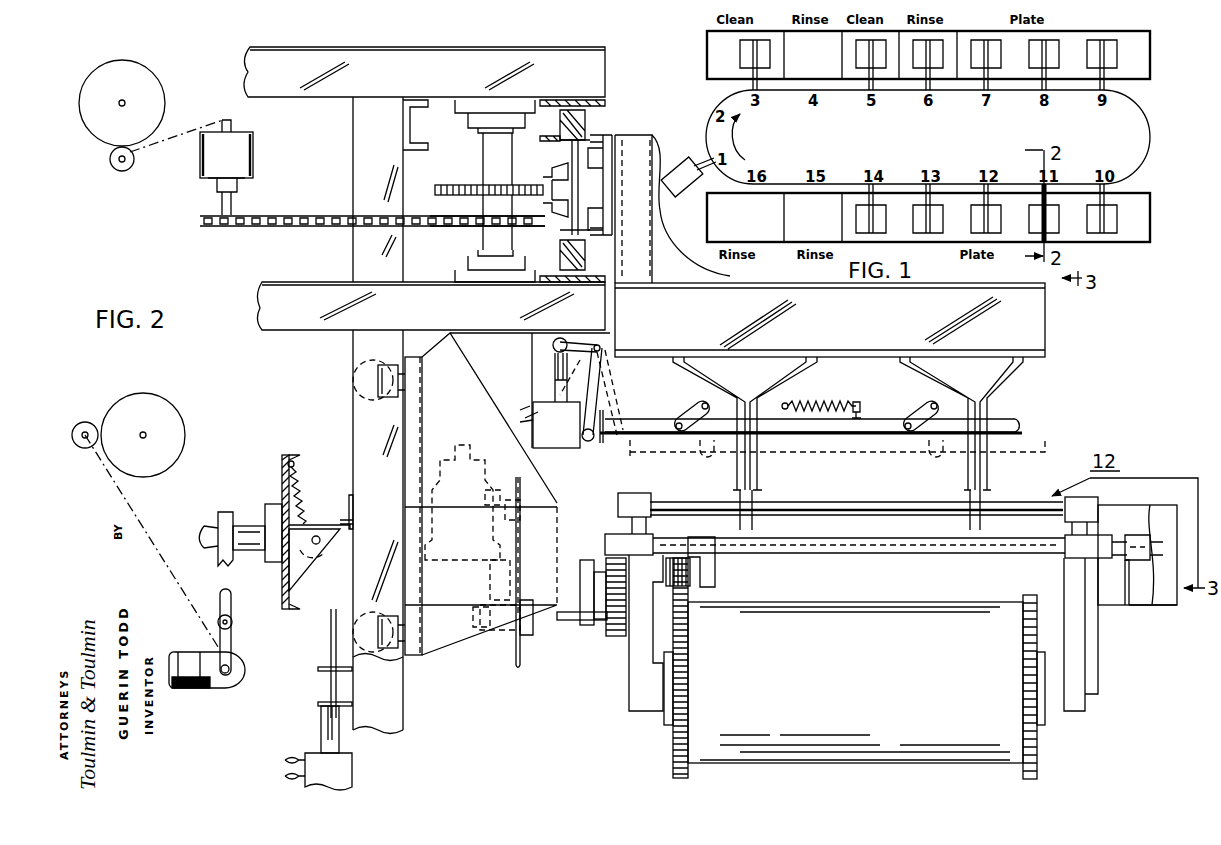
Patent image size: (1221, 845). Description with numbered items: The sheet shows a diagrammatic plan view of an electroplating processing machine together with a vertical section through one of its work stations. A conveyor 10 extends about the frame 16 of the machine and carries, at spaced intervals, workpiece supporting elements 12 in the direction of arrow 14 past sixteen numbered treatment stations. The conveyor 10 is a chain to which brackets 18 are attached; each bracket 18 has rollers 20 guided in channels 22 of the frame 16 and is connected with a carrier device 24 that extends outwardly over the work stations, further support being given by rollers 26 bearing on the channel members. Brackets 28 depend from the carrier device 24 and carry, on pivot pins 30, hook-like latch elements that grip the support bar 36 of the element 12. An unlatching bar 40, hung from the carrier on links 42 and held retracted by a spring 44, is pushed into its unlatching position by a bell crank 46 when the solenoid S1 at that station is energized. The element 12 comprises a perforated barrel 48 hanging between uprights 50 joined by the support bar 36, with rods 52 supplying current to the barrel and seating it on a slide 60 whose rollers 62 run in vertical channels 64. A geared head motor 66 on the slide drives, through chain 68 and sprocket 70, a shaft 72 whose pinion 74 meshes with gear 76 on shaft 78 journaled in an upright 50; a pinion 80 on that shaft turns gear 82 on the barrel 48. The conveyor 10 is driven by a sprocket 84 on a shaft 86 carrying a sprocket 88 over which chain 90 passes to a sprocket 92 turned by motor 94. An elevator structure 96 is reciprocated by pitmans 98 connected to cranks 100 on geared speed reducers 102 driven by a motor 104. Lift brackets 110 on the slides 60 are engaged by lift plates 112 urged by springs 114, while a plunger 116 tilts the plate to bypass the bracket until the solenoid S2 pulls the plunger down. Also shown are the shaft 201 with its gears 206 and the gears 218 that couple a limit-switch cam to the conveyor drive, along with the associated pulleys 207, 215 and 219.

In FIG. 1, the conveyor 10 is at (786, 181).
In FIG. 2, the conveyor 10 is at (548, 181).
In FIG. 2, the workpiece supporting element 12 is at (677, 172).
In FIG. 1, the arrow 14 is at (742, 156).
In FIG. 2, the frame 16 is at (352, 258).
In FIG. 2, the bracket 18 is at (590, 142).
In FIG. 2, the roller 20 is at (571, 112).
In FIG. 2, the channel 22 is at (595, 100).
In FIG. 2, the carrier device 24 is at (858, 352).
In FIG. 2, the roller 26 is at (606, 177).
In FIG. 2, the bracket 28 is at (745, 390).
In FIG. 2, the pivot pin 30 is at (760, 488).
In FIG. 2, the support bar 36 is at (870, 502).
In FIG. 2, the unlatching bar 40 is at (1022, 428).
In FIG. 2, the link 42 is at (690, 412).
In FIG. 2, the spring 44 is at (838, 405).
In FIG. 2, the bell crank 46 is at (598, 365).
In FIG. 2, the barrel 48 is at (1020, 728).
In FIG. 2, the upright 50 is at (640, 685).
In FIG. 2, the rod 52 is at (845, 554).
In FIG. 2, the slide 60 is at (441, 660).
In FIG. 2, the roller 62 is at (386, 398).
In FIG. 2, the vertical channel 64 is at (358, 394).
In FIG. 2, the geared head motor 66 is at (455, 460).
In FIG. 2, the chain 68 is at (512, 560).
In FIG. 2, the sprocket 70 is at (519, 664).
In FIG. 2, the shaft 72 is at (575, 621).
In FIG. 2, the pinion 74 is at (612, 633).
In FIG. 2, the gear 76 is at (622, 496).
In FIG. 2, the shaft 78 is at (693, 537).
In FIG. 2, the pinion 80 is at (692, 568).
In FIG. 2, the gear 82 is at (690, 672).
In FIG. 2, the sprocket 84 is at (468, 185).
In FIG. 2, the shaft 86 is at (490, 143).
In FIG. 2, the sprocket 88 is at (468, 228).
In FIG. 2, the chain 90 is at (330, 214).
In FIG. 2, the sprocket 92 is at (250, 228).
In FIG. 2, the motor 94 is at (247, 150).
In FIG. 2, the elevator structure 96 is at (282, 461).
In FIG. 2, the pitman 98 is at (222, 560).
In FIG. 2, the crank 100 is at (232, 630).
In FIG. 2, the geared speed reducer 102 is at (245, 670).
In FIG. 2, the motor 104 is at (195, 688).
In FIG. 2, the lift bracket 110 is at (350, 500).
In FIG. 2, the lift plate 112 is at (340, 519).
In FIG. 2, the spring 114 is at (290, 490).
In FIG. 2, the plunger 116 is at (330, 655).
In FIG. 2, the shaft 201 is at (147, 432).
In FIG. 2, the gears 206 is at (178, 428).
In FIG. 2, the pulley 207 is at (94, 423).
In FIG. 2, the pivot 215 is at (126, 103).
In FIG. 2, the gears 218 is at (158, 90).
In FIG. 2, the pulley 219 is at (130, 168).
In FIG. 2, the solenoid S1 is at (564, 446).
In FIG. 2, the solenoid S2 is at (352, 762).